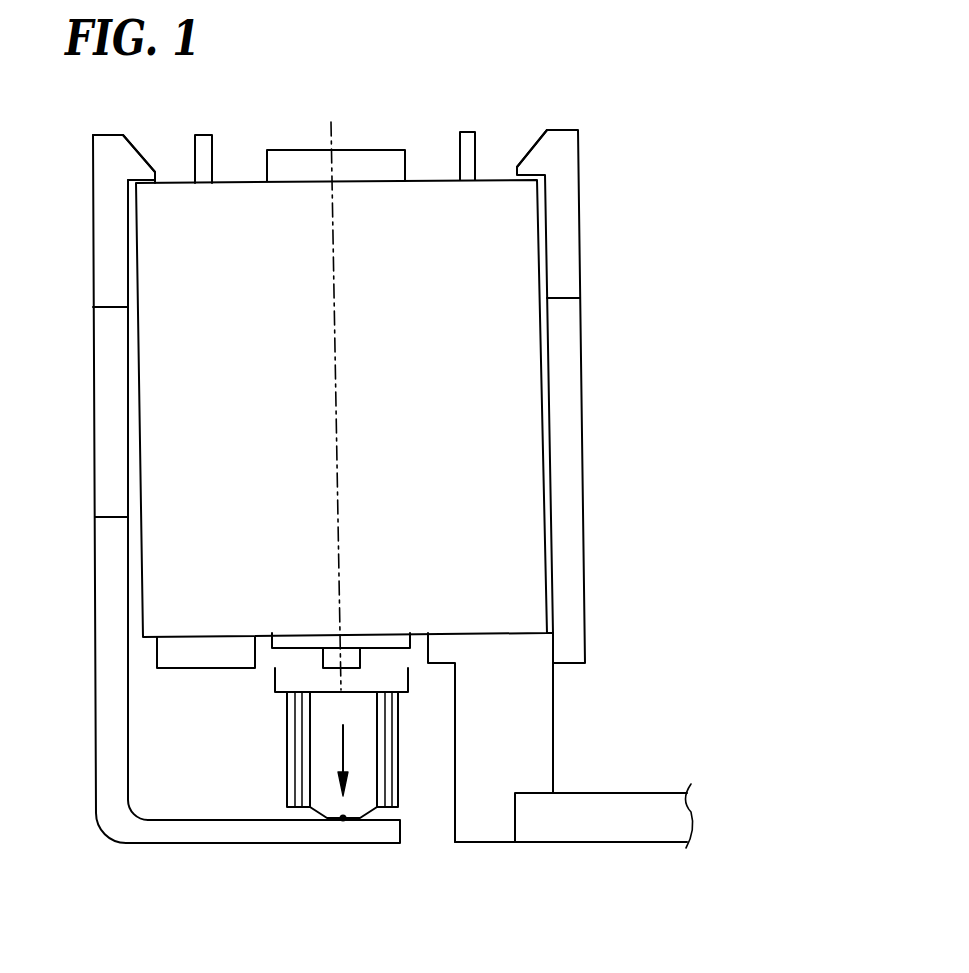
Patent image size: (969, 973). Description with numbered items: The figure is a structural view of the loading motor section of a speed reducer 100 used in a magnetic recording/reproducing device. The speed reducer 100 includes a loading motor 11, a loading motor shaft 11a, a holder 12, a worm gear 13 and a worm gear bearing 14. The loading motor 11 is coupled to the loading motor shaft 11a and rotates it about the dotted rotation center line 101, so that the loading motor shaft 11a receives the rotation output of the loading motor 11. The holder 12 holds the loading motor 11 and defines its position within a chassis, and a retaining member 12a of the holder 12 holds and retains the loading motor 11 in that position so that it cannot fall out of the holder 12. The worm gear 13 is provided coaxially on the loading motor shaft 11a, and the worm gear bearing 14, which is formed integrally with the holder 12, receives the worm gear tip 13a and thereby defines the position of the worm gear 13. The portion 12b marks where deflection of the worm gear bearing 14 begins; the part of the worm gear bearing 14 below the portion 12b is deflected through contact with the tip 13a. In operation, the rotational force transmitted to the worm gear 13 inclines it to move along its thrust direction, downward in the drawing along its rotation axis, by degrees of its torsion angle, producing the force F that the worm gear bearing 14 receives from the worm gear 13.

The speed reducer 100 is at (686, 74).
The rotation center line 101 is at (330, 389).
The loading motor 11 is at (507, 255).
The loading motor shaft 11a is at (337, 662).
The holder 12 is at (565, 392).
The retaining member 12a is at (127, 162).
The deflection portion 12b is at (115, 512).
The worm gear 13 is at (365, 763).
The worm gear tip 13a is at (343, 820).
The worm gear bearing 14 is at (187, 832).
The force F is at (343, 757).